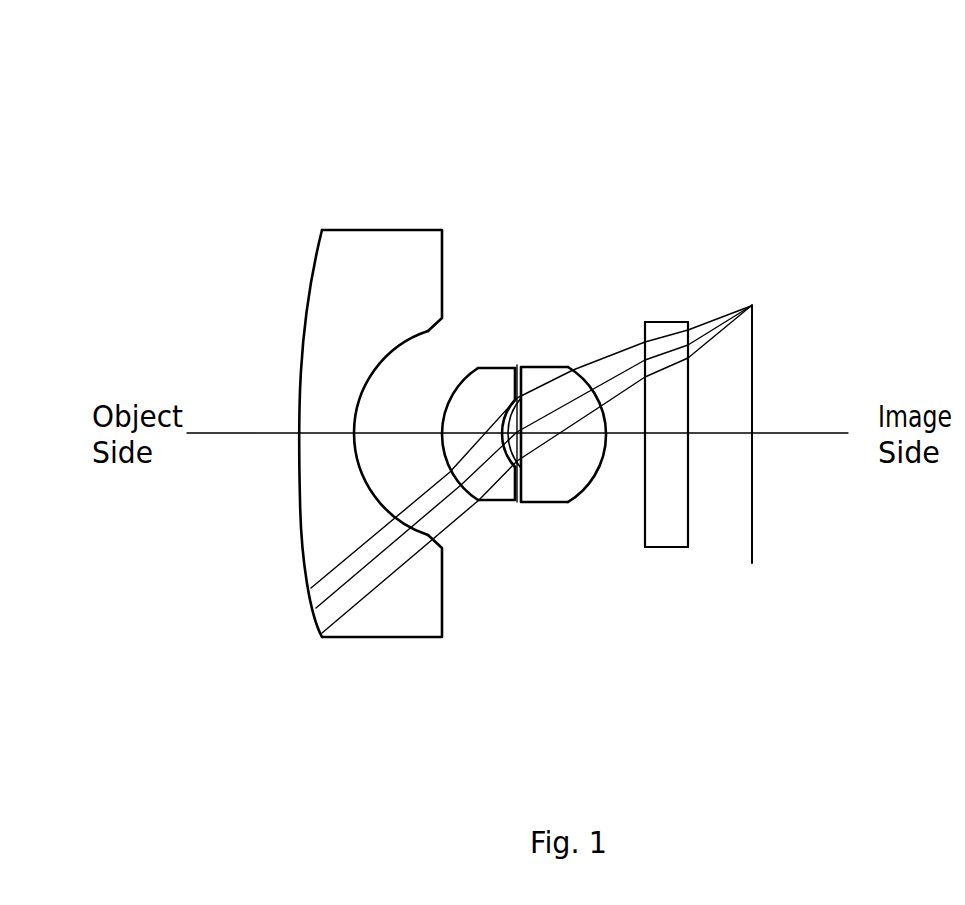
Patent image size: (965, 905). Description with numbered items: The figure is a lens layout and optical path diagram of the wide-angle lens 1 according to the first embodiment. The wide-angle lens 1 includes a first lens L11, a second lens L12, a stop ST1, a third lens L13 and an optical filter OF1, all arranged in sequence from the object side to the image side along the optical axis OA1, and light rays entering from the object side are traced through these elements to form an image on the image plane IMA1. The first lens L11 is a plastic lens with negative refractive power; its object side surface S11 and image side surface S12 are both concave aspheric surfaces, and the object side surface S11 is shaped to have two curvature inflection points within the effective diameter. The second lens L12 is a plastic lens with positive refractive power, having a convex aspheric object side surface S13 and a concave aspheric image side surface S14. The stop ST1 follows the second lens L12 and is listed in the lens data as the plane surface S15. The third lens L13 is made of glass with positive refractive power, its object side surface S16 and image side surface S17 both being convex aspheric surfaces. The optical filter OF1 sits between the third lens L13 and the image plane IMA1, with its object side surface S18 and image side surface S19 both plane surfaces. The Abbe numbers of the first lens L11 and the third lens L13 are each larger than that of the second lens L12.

The wide-angle lens 1 is at (120, 77).
The first lens L11 is at (347, 422).
The second lens L12 is at (452, 423).
The stop ST1 is at (519, 418).
The third lens L13 is at (595, 422).
The optical filter OF1 is at (738, 410).
The image plane IMA1 is at (752, 305).
The optical axis OA1 is at (265, 433).
The object side surface S11 is at (302, 562).
The image side surface S12 is at (379, 500).
The object side surface S13 is at (458, 483).
The image side surface S14 is at (508, 466).
The stop surface S15 is at (517, 502).
The object side surface S16 is at (521, 447).
The image side surface S17 is at (590, 483).
The object side surface S18 is at (645, 517).
The image side surface S19 is at (690, 518).